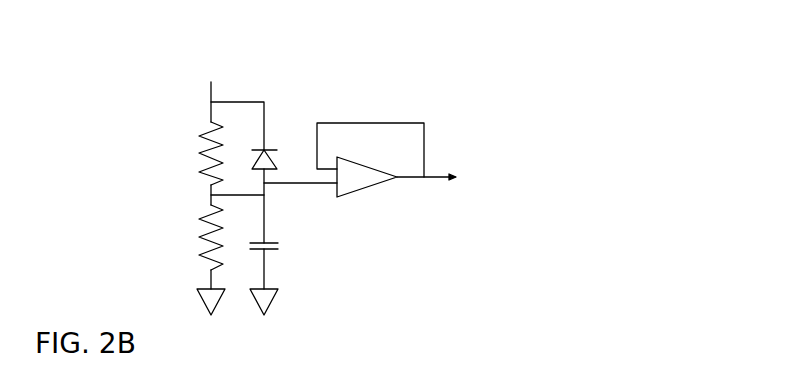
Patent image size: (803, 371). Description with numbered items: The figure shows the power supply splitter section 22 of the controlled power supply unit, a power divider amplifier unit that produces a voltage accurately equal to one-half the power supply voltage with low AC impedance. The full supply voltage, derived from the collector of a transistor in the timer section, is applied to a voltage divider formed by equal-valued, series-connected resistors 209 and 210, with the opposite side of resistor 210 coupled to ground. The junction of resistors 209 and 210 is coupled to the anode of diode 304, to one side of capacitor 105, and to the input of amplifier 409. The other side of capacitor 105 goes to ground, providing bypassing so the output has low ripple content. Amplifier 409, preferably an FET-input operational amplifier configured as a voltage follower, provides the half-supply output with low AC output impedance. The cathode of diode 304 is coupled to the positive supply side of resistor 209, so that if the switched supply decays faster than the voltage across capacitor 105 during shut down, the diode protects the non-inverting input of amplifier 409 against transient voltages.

The power supply splitter section 22 is at (413, 182).
The resistor 209 is at (199, 155).
The resistor 210 is at (199, 243).
The diode 304 is at (279, 154).
The capacitor 105 is at (285, 248).
The amplifier 409 is at (374, 192).